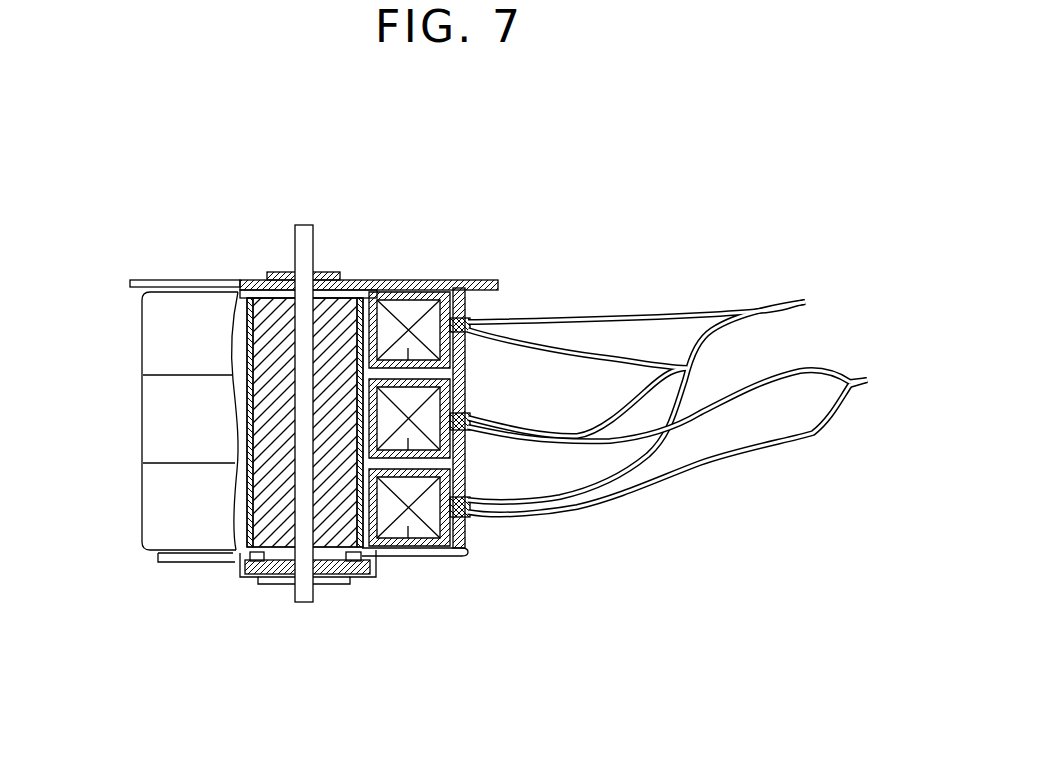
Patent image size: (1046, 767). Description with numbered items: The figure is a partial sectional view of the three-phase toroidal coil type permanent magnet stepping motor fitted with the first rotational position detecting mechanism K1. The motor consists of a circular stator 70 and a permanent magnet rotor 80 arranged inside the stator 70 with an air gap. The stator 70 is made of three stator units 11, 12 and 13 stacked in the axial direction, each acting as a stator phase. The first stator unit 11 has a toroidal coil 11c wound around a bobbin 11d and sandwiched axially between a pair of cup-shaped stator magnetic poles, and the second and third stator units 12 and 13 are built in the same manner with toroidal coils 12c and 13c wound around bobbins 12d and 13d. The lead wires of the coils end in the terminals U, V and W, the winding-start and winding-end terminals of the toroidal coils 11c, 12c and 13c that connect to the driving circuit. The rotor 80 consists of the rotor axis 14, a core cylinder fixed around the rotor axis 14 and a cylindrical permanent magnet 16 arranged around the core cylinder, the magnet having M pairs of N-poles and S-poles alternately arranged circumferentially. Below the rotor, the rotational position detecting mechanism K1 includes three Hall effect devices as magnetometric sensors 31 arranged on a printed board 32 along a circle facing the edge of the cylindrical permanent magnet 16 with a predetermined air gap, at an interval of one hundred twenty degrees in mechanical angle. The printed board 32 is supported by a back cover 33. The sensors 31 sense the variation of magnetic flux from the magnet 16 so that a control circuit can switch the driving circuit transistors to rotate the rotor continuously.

The stator 70 is at (140, 295).
The first stator unit 11 is at (140, 345).
The second stator unit 12 is at (140, 420).
The third stator unit 13 is at (140, 500).
The toroidal coil 11c is at (470, 313).
The bobbin 11d is at (414, 292).
The toroidal coil 12c is at (462, 462).
The bobbin 12d is at (462, 397).
The toroidal coil 13c is at (424, 562).
The bobbin 13d is at (463, 513).
The rotor axis 14 is at (300, 222).
The cylindrical permanent magnet 16 is at (250, 503).
The permanent magnet rotor 80 is at (324, 272).
The magnetometric sensor 31 is at (239, 580).
The printed board 32 is at (275, 578).
The back cover 33 is at (328, 578).
The rotational position detecting mechanism K1 is at (330, 653).
The terminal of toroidal coil U is at (800, 298).
The terminal of toroidal coil V is at (628, 410).
The terminal of toroidal coil W is at (697, 392).